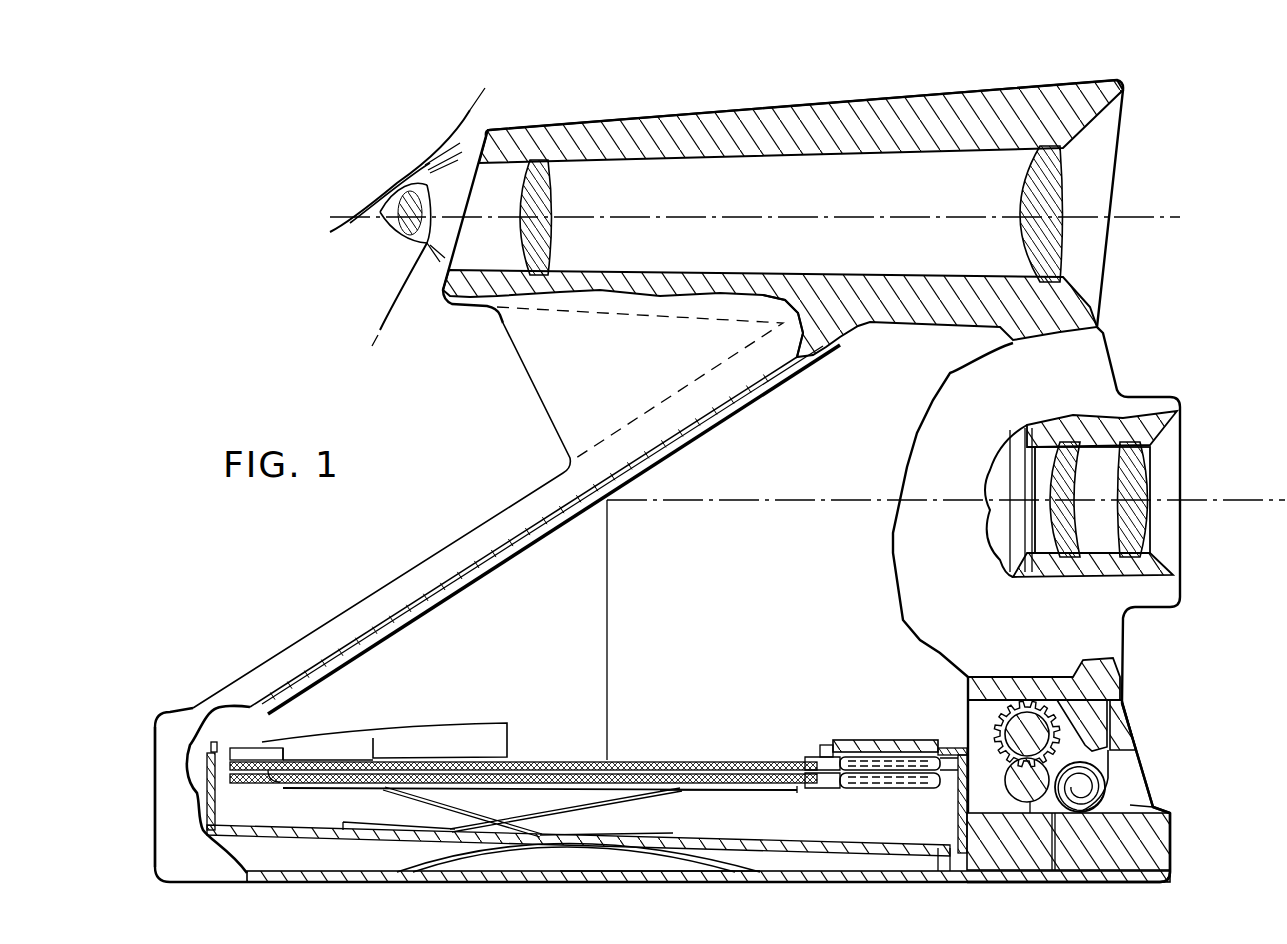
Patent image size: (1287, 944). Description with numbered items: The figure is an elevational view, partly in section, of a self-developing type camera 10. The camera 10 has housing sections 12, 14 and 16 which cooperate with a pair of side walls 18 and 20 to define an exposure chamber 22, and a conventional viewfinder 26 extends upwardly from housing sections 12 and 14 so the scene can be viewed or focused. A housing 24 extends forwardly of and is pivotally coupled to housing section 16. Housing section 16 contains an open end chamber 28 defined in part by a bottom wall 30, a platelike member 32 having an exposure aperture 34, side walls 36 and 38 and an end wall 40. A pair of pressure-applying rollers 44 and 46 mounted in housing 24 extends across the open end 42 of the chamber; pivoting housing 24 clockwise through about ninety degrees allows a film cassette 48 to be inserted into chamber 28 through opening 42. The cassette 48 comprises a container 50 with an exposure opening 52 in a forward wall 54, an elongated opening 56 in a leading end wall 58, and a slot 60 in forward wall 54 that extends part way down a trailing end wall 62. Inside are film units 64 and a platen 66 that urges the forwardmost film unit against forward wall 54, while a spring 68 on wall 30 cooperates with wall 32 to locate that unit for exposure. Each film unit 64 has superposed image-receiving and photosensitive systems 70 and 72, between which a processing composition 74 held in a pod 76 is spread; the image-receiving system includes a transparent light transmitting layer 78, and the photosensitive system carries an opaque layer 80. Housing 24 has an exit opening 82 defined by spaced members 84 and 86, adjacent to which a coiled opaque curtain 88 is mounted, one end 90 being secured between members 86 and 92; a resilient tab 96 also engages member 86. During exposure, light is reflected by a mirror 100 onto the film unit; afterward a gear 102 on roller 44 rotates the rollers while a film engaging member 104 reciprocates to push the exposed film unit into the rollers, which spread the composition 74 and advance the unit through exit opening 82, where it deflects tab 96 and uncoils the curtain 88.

The self-developing type camera 10 is at (1142, 181).
The housing section 12 is at (1202, 538).
The housing section 14 is at (491, 503).
The housing section 16 is at (475, 894).
The side wall 18 is at (933, 420).
The side wall 20 is at (683, 587).
The exposure chamber 22 is at (466, 622).
The housing 24 is at (1082, 892).
The viewfinder 26 is at (783, 100).
The open end chamber 28 is at (349, 866).
The bottom wall 30 is at (598, 882).
The platelike member 32 is at (858, 740).
The exposure aperture 34 is at (827, 743).
The side wall 36 is at (166, 865).
The side wall 38 is at (291, 862).
The end wall 40 is at (155, 807).
The open end 42 is at (984, 842).
The roller 44 is at (1008, 703).
The roller 46 is at (1027, 805).
The film cassette 48 is at (523, 722).
The container 50 is at (816, 866).
The exposure opening 52 is at (817, 747).
The forward wall 54 is at (961, 753).
The elongated opening 56 is at (963, 765).
The leading end wall 58 is at (963, 793).
The slot 60 is at (223, 742).
The trailing end wall 62 is at (215, 795).
The film unit 64 is at (798, 797).
The platen 66 is at (637, 793).
The spring 68 is at (597, 848).
The image-receiving system 70 is at (618, 762).
The photosensitive system 72 is at (712, 790).
The processing composition 74 is at (890, 790).
The pod 76 is at (937, 790).
The light transmitting layer 78 is at (530, 762).
The opaque layer 80 is at (268, 776).
The exit opening 82 is at (1165, 783).
The member 84 is at (1142, 803).
The member 86 is at (1100, 668).
The curtain 88 is at (1112, 782).
The end of curtain 90 is at (1086, 710).
The member 92 is at (1128, 724).
The resilient tab 96 is at (1063, 810).
The mirror 100 is at (717, 426).
The gear 102 is at (1025, 725).
The film engaging member 104 is at (318, 740).